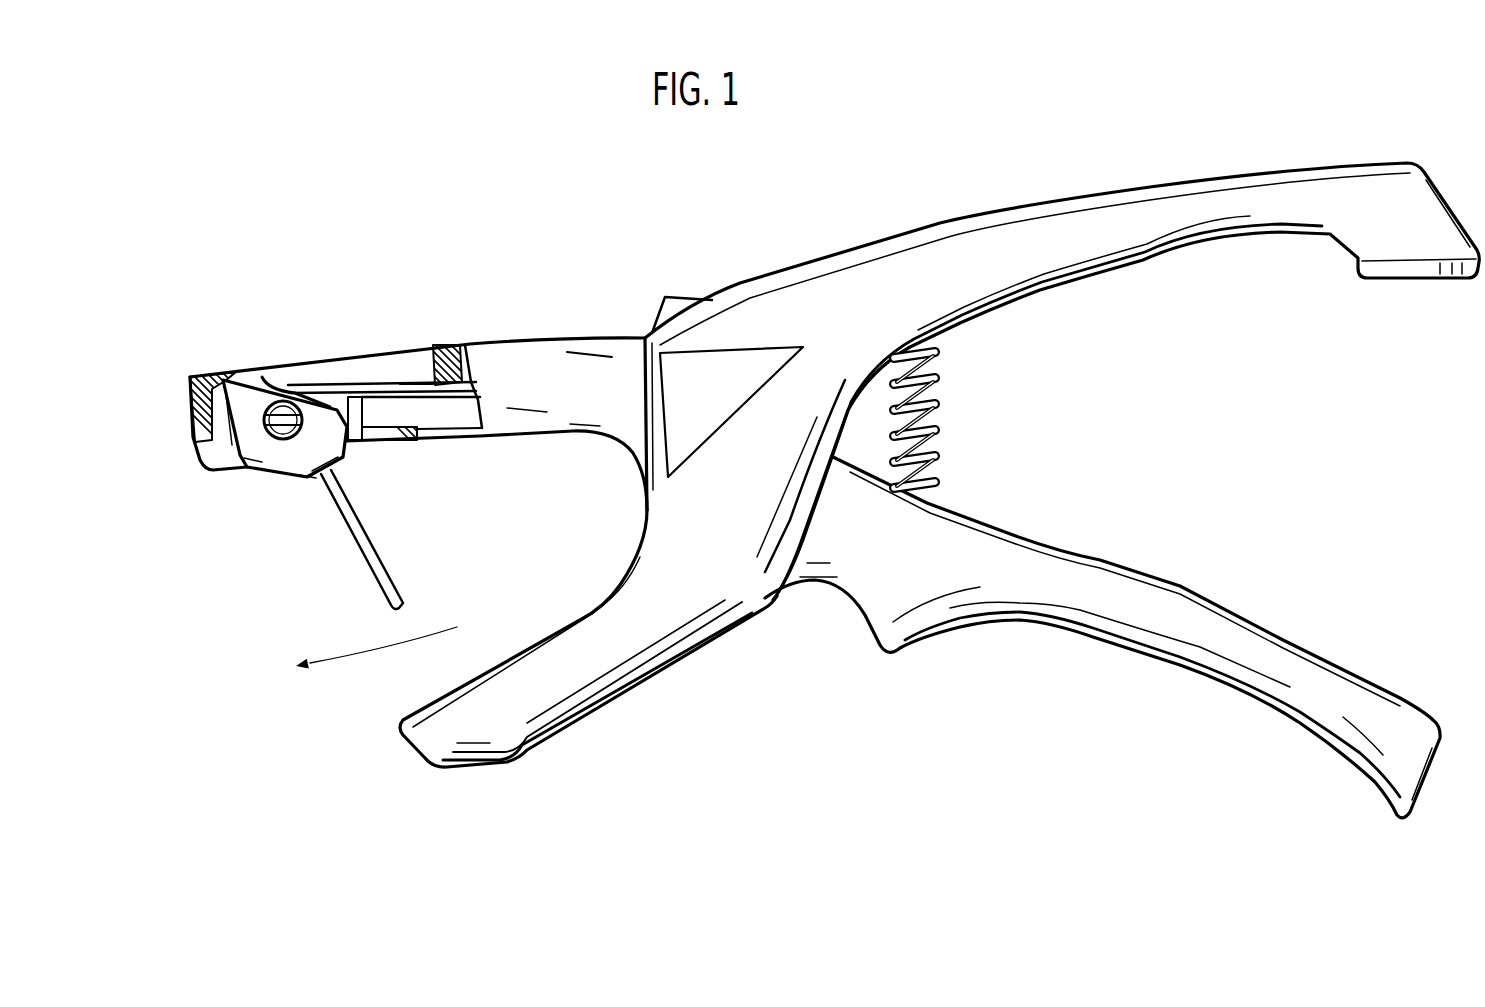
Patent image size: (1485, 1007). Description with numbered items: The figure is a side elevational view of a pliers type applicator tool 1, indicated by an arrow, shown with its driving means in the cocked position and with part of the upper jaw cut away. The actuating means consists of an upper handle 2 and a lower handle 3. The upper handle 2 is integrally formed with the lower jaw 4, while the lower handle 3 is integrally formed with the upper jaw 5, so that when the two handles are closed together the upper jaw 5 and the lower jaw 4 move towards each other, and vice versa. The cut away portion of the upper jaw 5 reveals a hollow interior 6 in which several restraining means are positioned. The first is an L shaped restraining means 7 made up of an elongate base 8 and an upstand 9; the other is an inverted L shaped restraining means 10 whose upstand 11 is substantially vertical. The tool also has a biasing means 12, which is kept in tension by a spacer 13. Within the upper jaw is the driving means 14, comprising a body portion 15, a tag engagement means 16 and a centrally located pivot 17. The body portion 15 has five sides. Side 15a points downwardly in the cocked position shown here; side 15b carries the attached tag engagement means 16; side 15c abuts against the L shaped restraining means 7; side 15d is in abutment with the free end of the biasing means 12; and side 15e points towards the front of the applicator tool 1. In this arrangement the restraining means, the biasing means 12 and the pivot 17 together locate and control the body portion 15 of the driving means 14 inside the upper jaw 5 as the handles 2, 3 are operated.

The applicator tool 1 is at (938, 178).
The upper handle 2 is at (1122, 213).
The lower handle 3 is at (1260, 637).
The lower jaw 4 is at (617, 677).
The upper jaw 5 is at (547, 355).
The hollow interior 6 is at (387, 365).
The L shaped restraining means 7 is at (408, 470).
The elongate base 8 is at (410, 432).
The upstand 9 is at (350, 382).
The inverted L shaped restraining means 10 is at (182, 358).
The upstand 11 is at (205, 378).
The biasing means 12 is at (413, 380).
The spacer 13 is at (443, 345).
The driving means 14 is at (305, 510).
The body portion 15 is at (273, 447).
The side 15a is at (260, 463).
The side 15b is at (321, 470).
The side 15c is at (355, 445).
The side 15d is at (300, 382).
The side 15e is at (228, 437).
The tag engagement means 16 is at (370, 557).
The pivot 17 is at (258, 407).